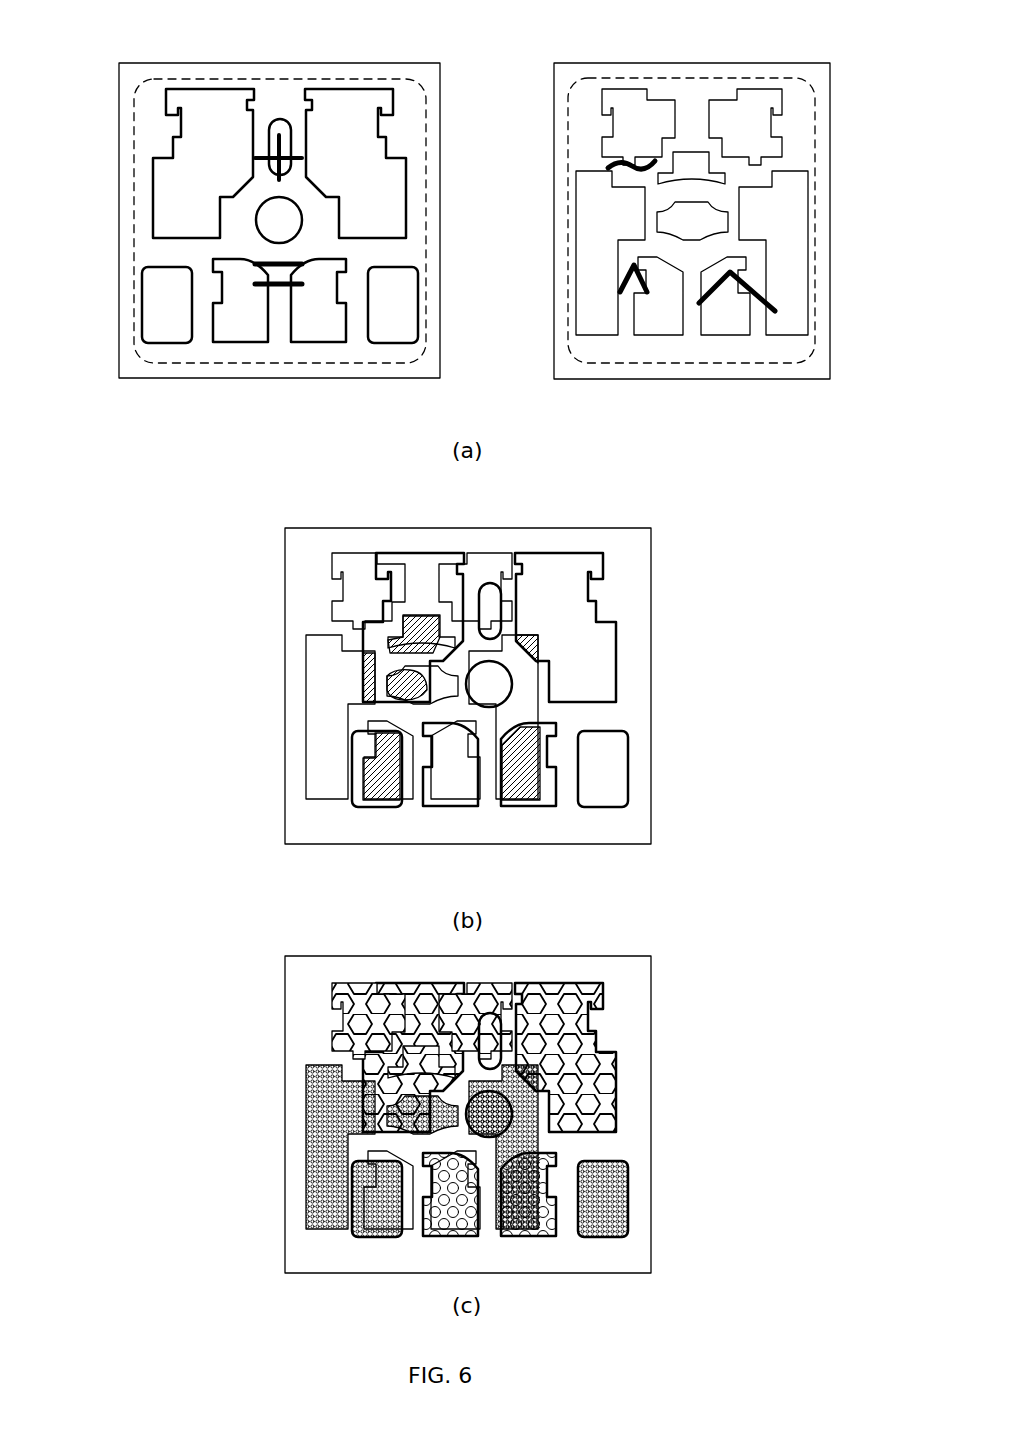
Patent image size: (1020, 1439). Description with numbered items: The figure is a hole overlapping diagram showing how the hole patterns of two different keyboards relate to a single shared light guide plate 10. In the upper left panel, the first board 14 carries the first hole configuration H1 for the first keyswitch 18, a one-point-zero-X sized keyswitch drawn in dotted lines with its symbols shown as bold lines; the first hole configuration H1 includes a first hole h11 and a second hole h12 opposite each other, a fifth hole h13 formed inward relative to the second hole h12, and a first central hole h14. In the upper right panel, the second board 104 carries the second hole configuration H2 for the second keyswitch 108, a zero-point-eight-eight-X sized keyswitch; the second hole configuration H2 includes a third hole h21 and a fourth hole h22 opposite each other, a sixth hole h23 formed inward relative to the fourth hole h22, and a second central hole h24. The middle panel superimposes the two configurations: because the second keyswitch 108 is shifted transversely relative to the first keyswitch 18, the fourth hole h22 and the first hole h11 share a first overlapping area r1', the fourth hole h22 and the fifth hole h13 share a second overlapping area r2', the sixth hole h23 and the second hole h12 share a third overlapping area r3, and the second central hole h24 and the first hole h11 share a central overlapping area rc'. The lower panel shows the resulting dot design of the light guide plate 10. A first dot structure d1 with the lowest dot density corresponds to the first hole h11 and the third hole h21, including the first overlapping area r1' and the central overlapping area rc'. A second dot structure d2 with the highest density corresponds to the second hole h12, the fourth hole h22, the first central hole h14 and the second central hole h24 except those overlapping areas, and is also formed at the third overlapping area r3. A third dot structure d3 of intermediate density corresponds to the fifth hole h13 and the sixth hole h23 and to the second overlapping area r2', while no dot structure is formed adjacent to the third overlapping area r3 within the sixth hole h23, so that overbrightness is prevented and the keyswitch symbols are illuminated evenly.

The first board 14 is at (119, 99).
The first keyswitch 18 is at (378, 79).
The first hole configuration H1 is at (172, 80).
The first hole h11 is at (222, 88).
The second hole h12 is at (165, 345).
The fifth hole h13 is at (235, 345).
The first central hole h14 is at (262, 228).
The second board 104 is at (830, 99).
The second keyswitch 108 is at (772, 78).
The second hole configuration H2 is at (608, 80).
The third hole h21 is at (658, 98).
The fourth hole h22 is at (595, 336).
The sixth hole h23 is at (658, 336).
The second central hole h24 is at (702, 184).
The first overlapping area r1' is at (467, 658).
The second overlapping area r2' is at (522, 811).
The third overlapping area r3 is at (385, 785).
The central overlapping area rc' is at (415, 587).
The light guide plate 10 is at (285, 1112).
The first dot structure d1 is at (600, 1098).
The second dot structure d2 is at (620, 1186).
The third dot structure d3 is at (520, 1214).